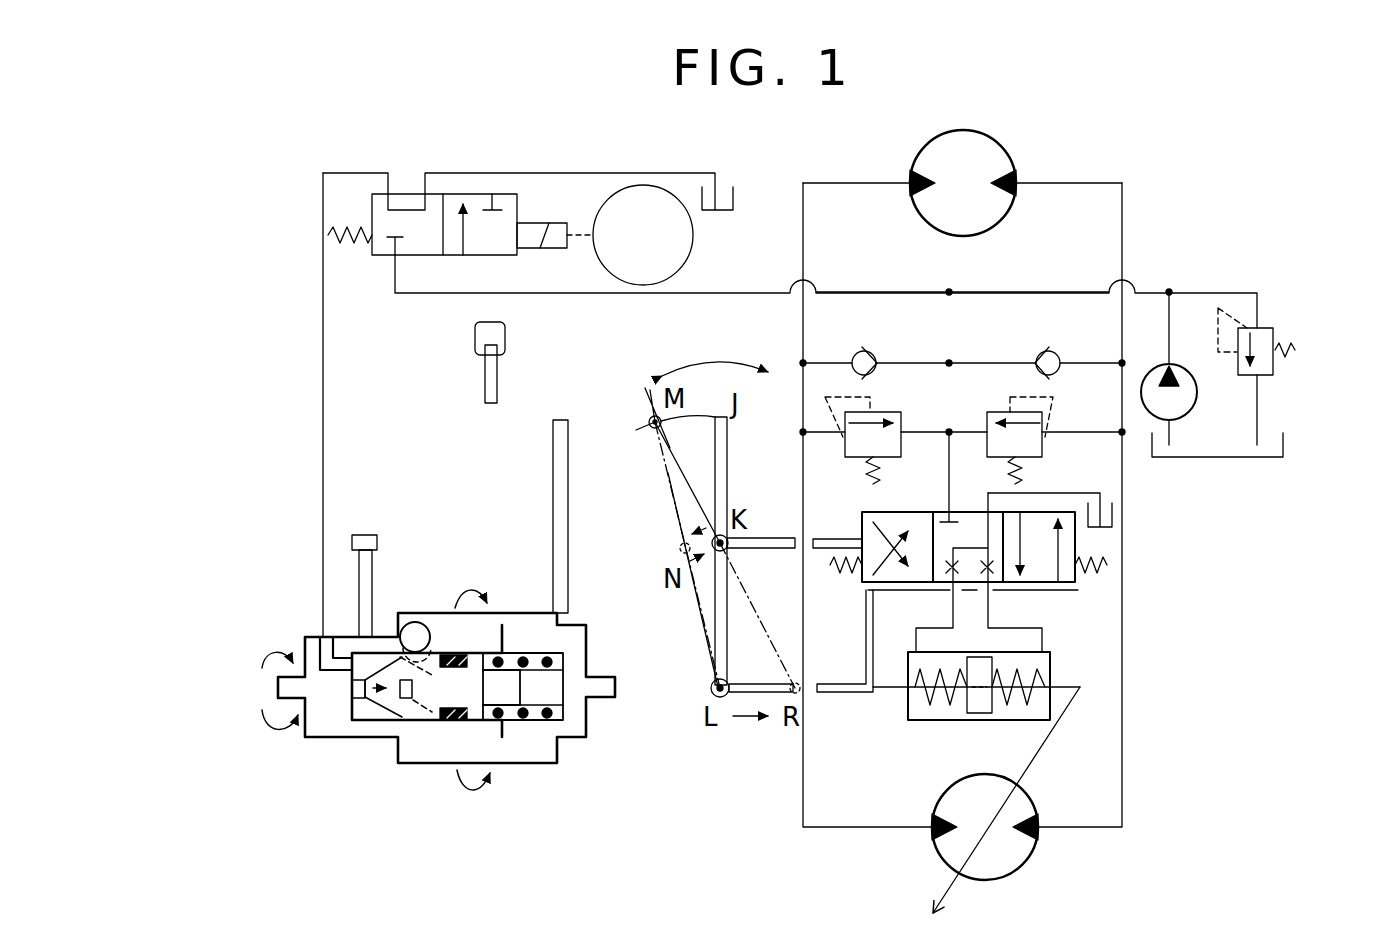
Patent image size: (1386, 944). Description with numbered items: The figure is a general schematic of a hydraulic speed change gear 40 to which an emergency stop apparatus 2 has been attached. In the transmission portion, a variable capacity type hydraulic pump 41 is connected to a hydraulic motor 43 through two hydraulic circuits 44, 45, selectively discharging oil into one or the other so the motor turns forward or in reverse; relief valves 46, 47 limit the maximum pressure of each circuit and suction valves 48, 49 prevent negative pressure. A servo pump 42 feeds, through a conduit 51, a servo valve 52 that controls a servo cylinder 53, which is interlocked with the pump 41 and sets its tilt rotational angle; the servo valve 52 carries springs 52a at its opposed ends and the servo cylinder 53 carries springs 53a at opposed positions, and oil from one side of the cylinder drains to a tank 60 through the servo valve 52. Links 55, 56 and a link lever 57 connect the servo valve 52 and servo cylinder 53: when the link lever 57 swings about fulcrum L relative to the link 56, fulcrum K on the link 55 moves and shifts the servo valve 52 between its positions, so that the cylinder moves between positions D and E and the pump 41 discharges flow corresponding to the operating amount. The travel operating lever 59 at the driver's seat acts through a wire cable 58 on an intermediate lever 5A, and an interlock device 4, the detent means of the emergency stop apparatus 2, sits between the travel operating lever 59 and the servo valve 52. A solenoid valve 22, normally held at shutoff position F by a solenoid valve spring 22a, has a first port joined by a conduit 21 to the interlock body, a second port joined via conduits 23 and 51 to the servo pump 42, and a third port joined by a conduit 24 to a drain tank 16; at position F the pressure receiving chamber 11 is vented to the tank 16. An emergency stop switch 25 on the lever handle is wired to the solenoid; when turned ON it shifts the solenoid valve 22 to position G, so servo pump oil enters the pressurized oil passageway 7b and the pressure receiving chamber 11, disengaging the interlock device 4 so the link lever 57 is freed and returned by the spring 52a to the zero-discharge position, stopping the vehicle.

The emergency stop apparatus 2 is at (312, 477).
The interlock device 4 is at (393, 770).
The intermediate lever 5A is at (553, 490).
The pressurized oil passageway 7b is at (320, 637).
The pressure receiving chamber 11 is at (368, 714).
The drain tank 16 is at (734, 197).
The conduit 21 is at (323, 378).
The solenoid valve 22 is at (435, 194).
The solenoid valve spring 22a is at (345, 255).
The conduit 23 is at (602, 293).
The conduit 24 is at (558, 173).
The emergency stop switch 25 is at (694, 253).
The hydraulic speed change gear 40 is at (1010, 521).
The variable capacity type hydraulic pump 41 is at (1017, 858).
The servo pump 42 is at (1185, 364).
The hydraulic motor 43 is at (1003, 153).
The hydraulic circuit 44 is at (803, 786).
The hydraulic circuit 45 is at (1124, 808).
The relief valve 46 is at (880, 412).
The relief valve 47 is at (1008, 412).
The suction valve 48 is at (868, 350).
The suction valve 49 is at (1038, 353).
The conduit 51 is at (1055, 292).
The servo valve 52 is at (1080, 577).
The spring 52a is at (1115, 573).
The servo cylinder 53 is at (1051, 661).
The spring 53a is at (1040, 703).
The link 55 is at (772, 538).
The link 56 is at (852, 693).
The link lever 57 is at (365, 535).
The wire cable 58 is at (551, 447).
The travel operating lever 59 is at (485, 380).
The tank 60 is at (1113, 512).